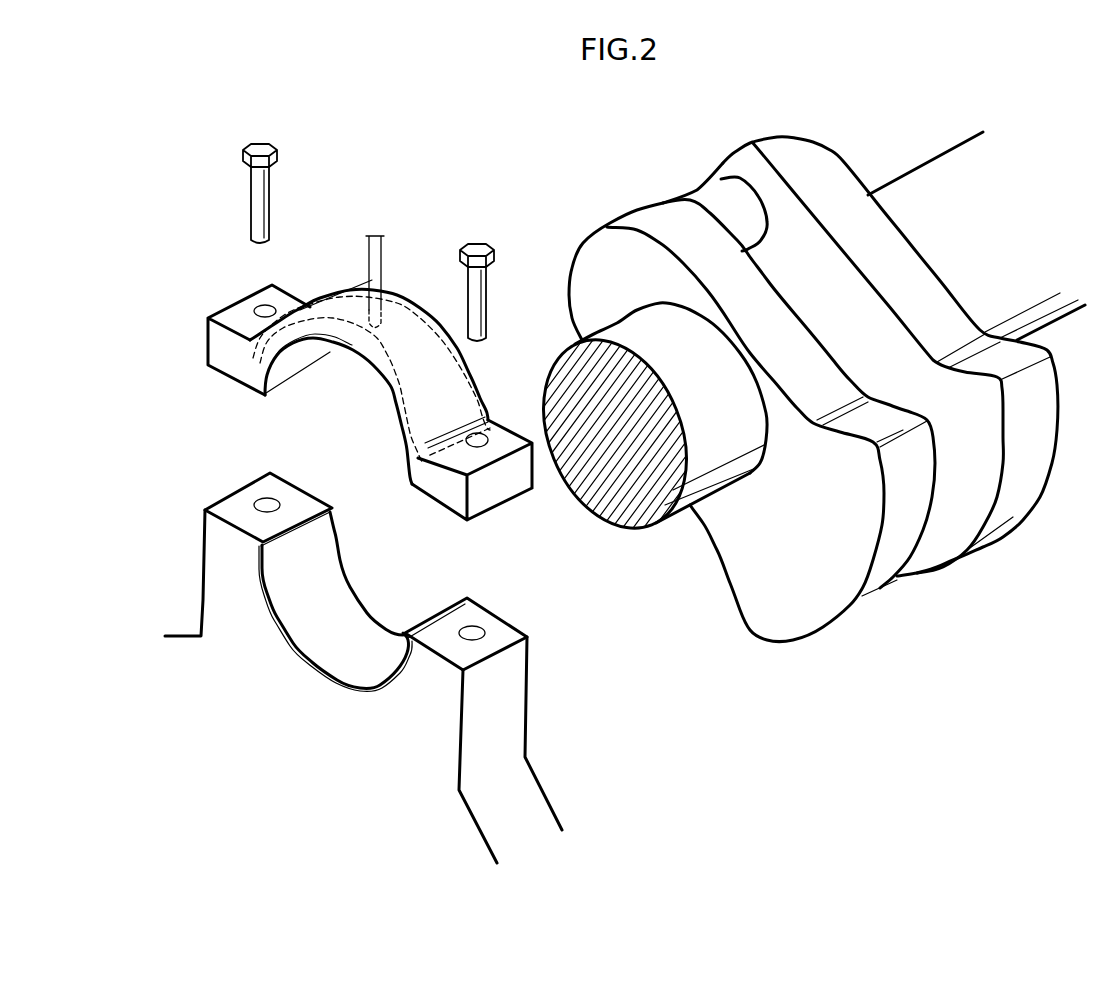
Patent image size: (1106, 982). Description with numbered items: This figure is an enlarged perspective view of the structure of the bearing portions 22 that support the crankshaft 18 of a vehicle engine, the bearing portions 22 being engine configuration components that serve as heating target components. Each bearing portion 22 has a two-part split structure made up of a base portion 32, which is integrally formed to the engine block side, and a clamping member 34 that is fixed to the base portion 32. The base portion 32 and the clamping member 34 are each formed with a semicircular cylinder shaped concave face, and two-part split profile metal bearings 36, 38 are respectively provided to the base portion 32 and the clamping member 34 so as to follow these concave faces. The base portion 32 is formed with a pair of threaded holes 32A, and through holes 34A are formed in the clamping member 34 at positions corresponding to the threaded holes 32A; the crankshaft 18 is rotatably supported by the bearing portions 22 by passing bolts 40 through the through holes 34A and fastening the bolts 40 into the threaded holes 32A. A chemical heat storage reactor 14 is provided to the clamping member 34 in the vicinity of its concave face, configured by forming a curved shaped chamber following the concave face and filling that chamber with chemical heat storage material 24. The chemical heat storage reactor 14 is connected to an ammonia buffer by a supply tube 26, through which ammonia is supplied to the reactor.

The crankshaft 18 is at (657, 153).
The bearing portions 22 is at (393, 185).
The chemical heat storage material 24 is at (366, 265).
The chemical heat storage reactors 14 is at (375, 273).
The supply tube 26 is at (368, 264).
The clamping member 34 is at (341, 366).
The through holes 34A is at (265, 312).
The metal bearing 38 is at (310, 368).
The metal bearing 36 is at (313, 543).
The base portion 32 is at (393, 629).
The threaded holes 32A is at (262, 500).
The bolts 40 is at (265, 140).